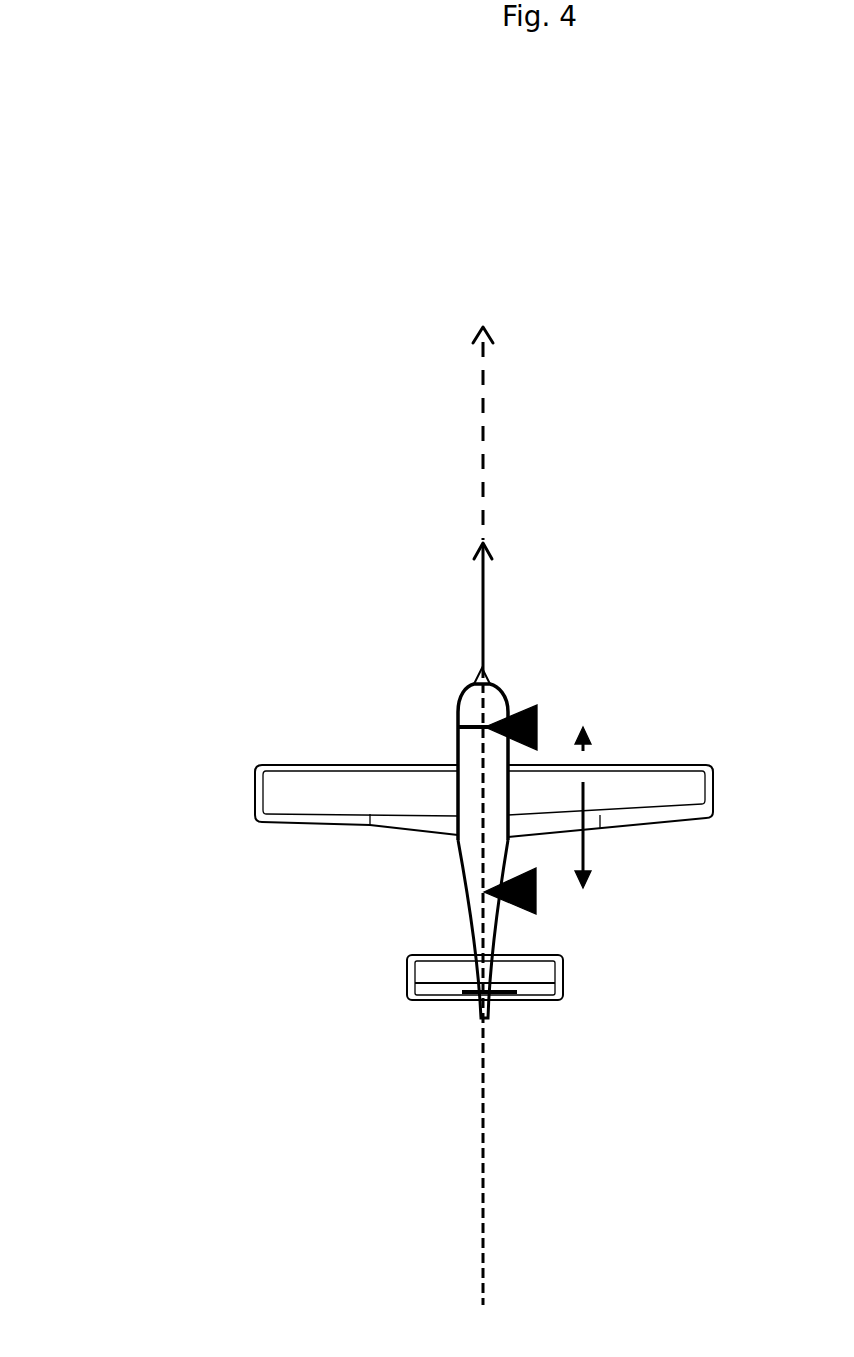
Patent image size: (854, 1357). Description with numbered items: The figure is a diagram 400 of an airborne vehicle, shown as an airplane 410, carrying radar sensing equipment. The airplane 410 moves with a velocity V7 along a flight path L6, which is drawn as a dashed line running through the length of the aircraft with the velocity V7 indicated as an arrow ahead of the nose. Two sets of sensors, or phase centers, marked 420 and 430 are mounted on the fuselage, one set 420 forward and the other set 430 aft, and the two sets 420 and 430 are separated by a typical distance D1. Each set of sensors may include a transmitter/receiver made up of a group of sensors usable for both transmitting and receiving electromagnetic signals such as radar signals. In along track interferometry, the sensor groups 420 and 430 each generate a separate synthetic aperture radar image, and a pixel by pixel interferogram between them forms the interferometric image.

The diagram 400 is at (148, 229).
The airplane 410 is at (353, 795).
The first set of sensors 420 is at (537, 730).
The second set of sensors 430 is at (538, 898).
The distance D1 is at (588, 795).
The flight path L6 is at (477, 383).
The velocity V7 is at (475, 575).